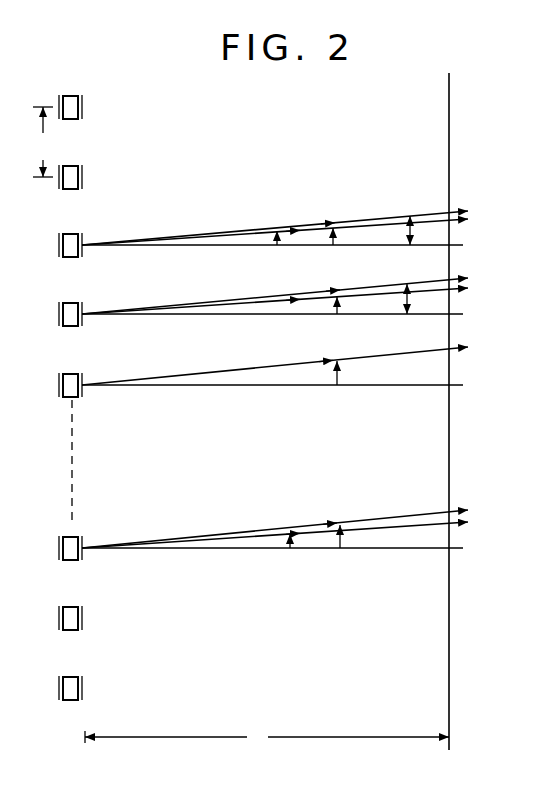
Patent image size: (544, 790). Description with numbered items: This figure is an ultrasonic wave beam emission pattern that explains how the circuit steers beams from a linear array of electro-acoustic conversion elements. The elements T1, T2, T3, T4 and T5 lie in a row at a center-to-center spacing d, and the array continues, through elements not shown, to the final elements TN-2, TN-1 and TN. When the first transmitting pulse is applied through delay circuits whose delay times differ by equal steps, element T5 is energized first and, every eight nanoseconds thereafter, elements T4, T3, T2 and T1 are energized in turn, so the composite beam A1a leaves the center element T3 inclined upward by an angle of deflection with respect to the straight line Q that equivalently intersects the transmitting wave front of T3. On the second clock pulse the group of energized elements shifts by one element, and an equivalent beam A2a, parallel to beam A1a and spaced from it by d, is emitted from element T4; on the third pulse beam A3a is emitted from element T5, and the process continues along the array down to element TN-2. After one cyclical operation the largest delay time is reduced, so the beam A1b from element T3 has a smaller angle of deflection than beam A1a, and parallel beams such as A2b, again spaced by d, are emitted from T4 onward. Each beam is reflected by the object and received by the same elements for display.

The electro-acoustic conversion element T1 is at (81, 94).
The electro-acoustic conversion element T2 is at (81, 164).
The electro-acoustic conversion element T3 is at (81, 232).
The electro-acoustic conversion element T4 is at (81, 301).
The electro-acoustic conversion element T5 is at (81, 372).
The electro-acoustic conversion element TN-2 is at (81, 535).
The transducer element N-1 TN-1 is at (81, 605).
The transducer element N TN is at (81, 675).
The ultrasonic wave beam A1a is at (466, 209).
The equivalent ultrasonic wave beam A1b is at (469, 217).
The ultrasonic wave beam A2a is at (468, 277).
The equivalent ultrasonic wave beam A2b is at (468, 288).
The ultrasonic wave beam A3a is at (466, 345).
The straight line Q is at (282, 397).
The center-to-center distance d is at (43, 142).